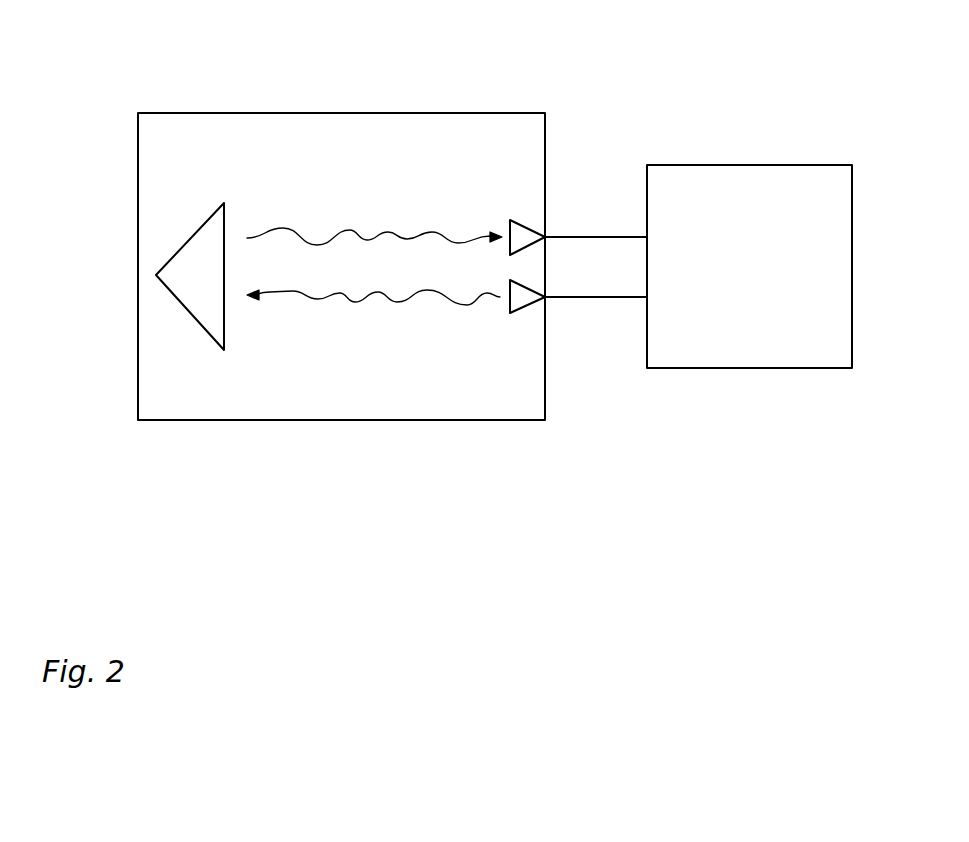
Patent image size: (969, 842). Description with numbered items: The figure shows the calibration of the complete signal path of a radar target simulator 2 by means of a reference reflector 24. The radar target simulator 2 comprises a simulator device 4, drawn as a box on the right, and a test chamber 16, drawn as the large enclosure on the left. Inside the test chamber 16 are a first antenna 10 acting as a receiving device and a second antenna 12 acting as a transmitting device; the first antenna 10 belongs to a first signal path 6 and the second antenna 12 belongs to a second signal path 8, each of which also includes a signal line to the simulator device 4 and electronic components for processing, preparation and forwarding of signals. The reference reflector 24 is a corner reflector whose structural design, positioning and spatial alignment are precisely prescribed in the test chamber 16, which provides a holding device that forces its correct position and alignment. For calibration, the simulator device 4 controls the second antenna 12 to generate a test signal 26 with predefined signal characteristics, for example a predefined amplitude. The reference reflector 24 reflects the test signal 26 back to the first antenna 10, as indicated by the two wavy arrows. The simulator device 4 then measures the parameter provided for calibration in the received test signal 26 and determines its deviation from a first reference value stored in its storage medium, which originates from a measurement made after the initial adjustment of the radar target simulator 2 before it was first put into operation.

The radar target simulator 2 is at (438, 493).
The simulator device 4 is at (803, 165).
The first signal path 6 is at (595, 206).
The second signal path 8 is at (612, 328).
The first antenna 10 is at (518, 218).
The second antenna 12 is at (530, 314).
The test chamber 16 is at (357, 113).
The reference reflector 24 is at (215, 215).
The test signal 26 is at (355, 302).